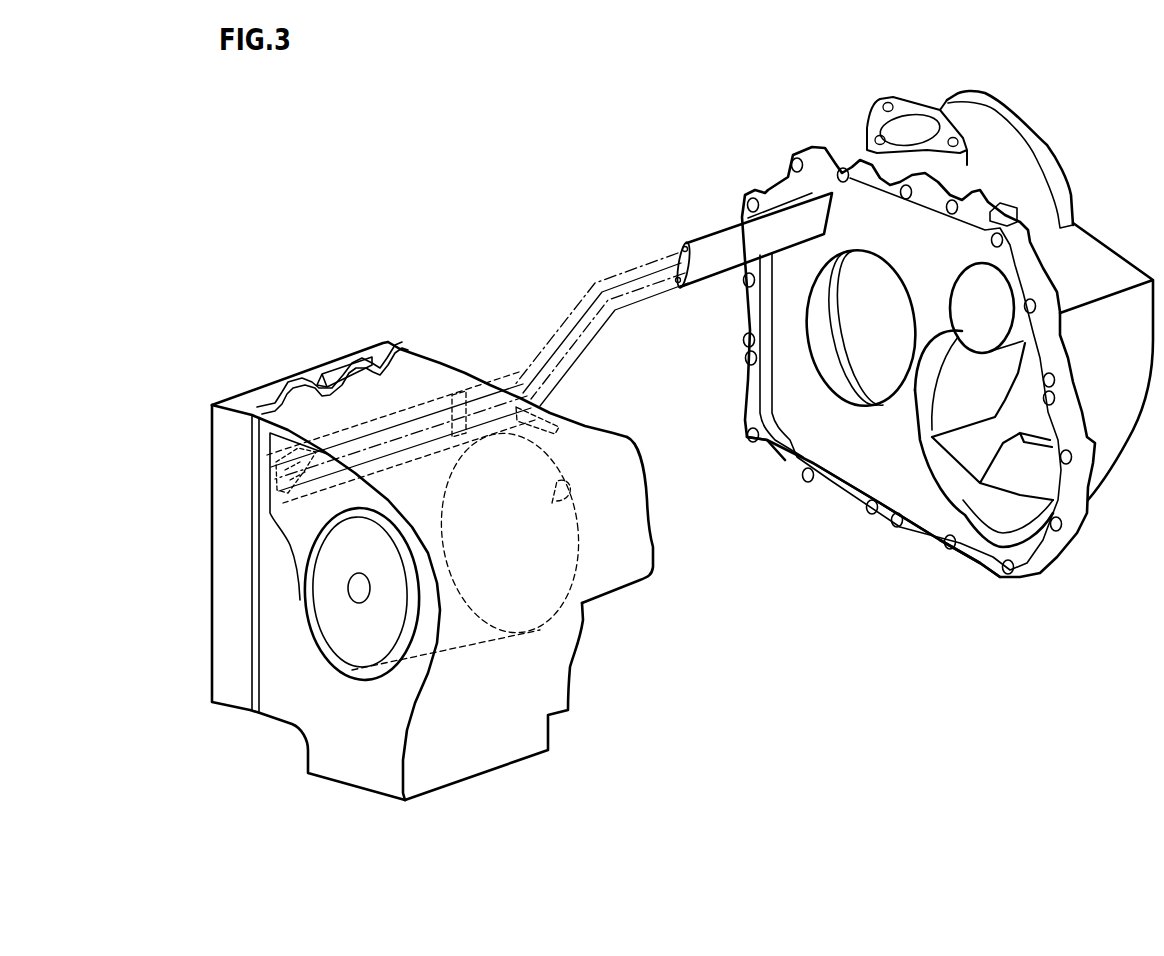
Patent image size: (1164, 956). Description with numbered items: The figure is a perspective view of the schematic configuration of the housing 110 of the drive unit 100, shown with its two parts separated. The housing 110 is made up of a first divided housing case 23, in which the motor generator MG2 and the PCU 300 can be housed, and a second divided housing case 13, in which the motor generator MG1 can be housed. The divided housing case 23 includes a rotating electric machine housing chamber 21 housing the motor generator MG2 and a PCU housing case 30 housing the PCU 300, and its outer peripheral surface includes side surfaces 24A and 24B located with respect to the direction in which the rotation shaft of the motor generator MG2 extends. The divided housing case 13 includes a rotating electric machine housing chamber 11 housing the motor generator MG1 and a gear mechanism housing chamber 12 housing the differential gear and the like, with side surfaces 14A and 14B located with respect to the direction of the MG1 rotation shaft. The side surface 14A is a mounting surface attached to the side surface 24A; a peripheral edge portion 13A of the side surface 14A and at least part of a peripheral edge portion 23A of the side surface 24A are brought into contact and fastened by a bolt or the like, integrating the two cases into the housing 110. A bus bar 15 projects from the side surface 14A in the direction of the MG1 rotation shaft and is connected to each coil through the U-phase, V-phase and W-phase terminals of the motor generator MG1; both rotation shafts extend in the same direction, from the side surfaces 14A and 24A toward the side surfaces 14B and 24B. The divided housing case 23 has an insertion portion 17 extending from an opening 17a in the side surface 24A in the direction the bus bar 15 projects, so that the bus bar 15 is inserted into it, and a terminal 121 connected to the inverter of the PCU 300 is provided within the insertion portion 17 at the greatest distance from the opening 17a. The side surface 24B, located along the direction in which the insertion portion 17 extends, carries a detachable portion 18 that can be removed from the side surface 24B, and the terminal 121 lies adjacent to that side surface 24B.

The vehicle drive device 100 is at (621, 115).
The PCU 300 is at (243, 398).
The PCU housing case 30 is at (214, 509).
The housing 110 is at (640, 608).
The side surface 24A is at (613, 423).
The side surface 24B is at (343, 757).
The divided housing case 23 is at (572, 663).
The peripheral edge portion 23A is at (558, 403).
The detachable portion 18 is at (302, 577).
The motor generator MG2 is at (468, 653).
The motor generator MG1 is at (865, 413).
The rotating electric machine housing chamber 21 is at (566, 501).
The insertion portion 17 is at (432, 401).
The opening 17a is at (465, 393).
The terminal 121 is at (276, 452).
The bus bar 15 is at (713, 248).
The divided housing case 13 is at (1112, 252).
The rotating electric machine housing chamber 11 is at (870, 357).
The gear mechanism housing chamber 12 is at (960, 458).
The peripheral edge portion 13A is at (787, 458).
The side surface 14A is at (932, 553).
The side surface 14B is at (1068, 168).